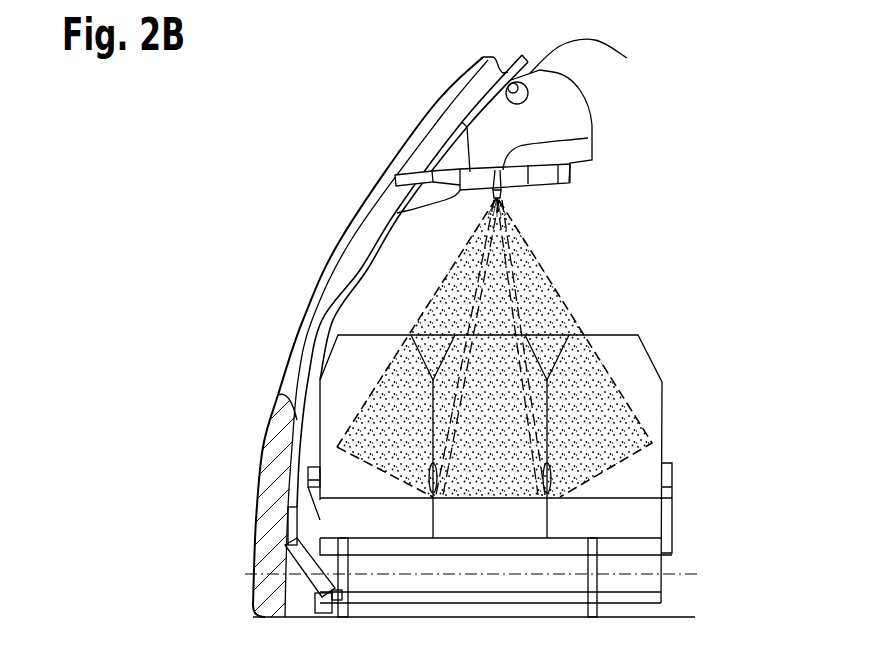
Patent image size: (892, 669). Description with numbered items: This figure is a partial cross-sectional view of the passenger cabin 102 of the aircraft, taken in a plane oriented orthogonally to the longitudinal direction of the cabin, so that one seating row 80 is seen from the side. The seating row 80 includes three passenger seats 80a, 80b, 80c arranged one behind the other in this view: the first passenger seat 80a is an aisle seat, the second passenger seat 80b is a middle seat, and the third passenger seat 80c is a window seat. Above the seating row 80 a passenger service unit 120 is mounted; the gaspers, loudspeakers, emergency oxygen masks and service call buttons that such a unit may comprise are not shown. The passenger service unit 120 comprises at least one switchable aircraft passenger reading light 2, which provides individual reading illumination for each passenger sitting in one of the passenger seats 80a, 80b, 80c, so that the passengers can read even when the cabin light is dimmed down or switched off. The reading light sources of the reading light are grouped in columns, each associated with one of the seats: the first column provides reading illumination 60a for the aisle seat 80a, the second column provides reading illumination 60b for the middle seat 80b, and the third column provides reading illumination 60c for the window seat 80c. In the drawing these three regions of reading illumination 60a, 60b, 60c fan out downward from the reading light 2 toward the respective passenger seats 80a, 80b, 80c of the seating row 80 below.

The passenger cabin 102 is at (330, 125).
The aircraft passenger reading light 2 is at (587, 138).
The passenger service unit 120 is at (535, 198).
The reading illumination for aisle seat 60a is at (550, 305).
The reading illumination for middle seat 60b is at (497, 287).
The reading illumination for window seat 60c is at (385, 387).
The seating row 80 is at (695, 362).
The passenger seat 80a is at (668, 323).
The passenger seat 80b is at (488, 520).
The passenger seat 80c is at (383, 332).